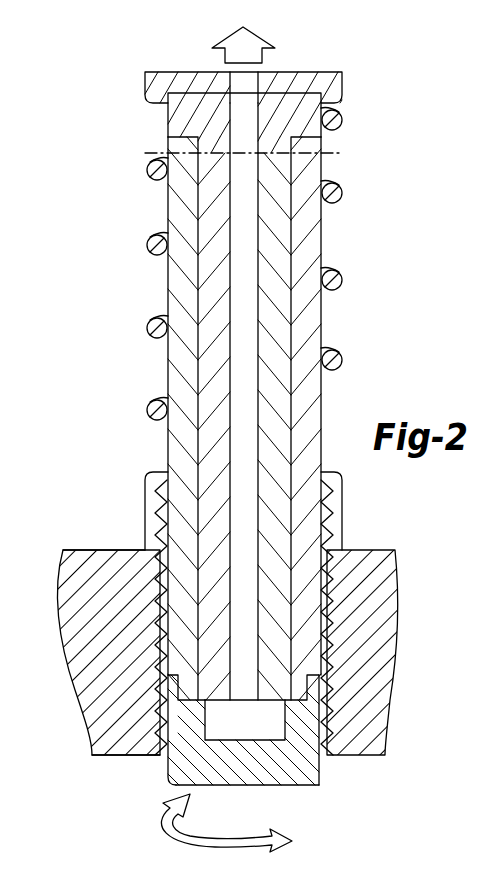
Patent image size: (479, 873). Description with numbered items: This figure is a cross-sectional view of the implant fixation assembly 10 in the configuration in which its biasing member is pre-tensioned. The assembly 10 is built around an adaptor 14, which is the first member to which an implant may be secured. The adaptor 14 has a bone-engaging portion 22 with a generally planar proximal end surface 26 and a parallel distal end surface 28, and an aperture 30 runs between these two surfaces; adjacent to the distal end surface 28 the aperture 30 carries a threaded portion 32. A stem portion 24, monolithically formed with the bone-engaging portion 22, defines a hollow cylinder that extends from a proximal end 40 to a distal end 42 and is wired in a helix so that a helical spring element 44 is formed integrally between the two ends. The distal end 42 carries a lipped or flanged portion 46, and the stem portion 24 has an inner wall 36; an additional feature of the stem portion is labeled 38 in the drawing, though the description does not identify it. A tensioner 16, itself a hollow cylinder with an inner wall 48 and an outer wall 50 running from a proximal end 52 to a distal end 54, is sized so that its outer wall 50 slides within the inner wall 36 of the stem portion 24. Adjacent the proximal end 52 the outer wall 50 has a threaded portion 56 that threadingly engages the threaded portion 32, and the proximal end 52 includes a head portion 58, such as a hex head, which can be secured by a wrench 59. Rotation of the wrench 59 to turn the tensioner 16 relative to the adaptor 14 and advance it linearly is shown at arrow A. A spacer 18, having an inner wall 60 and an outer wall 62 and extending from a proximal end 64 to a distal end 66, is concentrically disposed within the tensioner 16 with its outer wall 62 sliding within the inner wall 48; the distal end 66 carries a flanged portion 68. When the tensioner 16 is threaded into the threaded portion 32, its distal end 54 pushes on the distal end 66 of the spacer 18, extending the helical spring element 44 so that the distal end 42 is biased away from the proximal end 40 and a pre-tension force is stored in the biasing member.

The implant fixation assembly 10 is at (251, 90).
The adaptor 14 is at (240, 607).
The tensioner 16 is at (183, 275).
The spacer 18 is at (249, 118).
The bone-engaging portion 22 is at (93, 664).
The stem portion 24 is at (153, 488).
The proximal end surface 26 is at (100, 757).
The distal end surface 28 is at (388, 550).
The aperture 30 is at (250, 756).
The threaded portion 32 is at (325, 748).
The inner wall 36 is at (336, 482).
The external thread 38 is at (340, 507).
The proximal end 40 is at (145, 550).
The distal end 42 is at (203, 65).
The helical spring element 44 is at (333, 283).
The flanged portion 46 is at (175, 88).
The inner wall 48 is at (305, 216).
The outer wall 50 is at (322, 163).
The proximal end 52 is at (170, 686).
The distal end 54 is at (170, 151).
The threaded portion 56 is at (325, 663).
The head portion 58 is at (298, 702).
The wrench 59 is at (303, 778).
The inner wall 60 is at (230, 352).
The outer wall 62 is at (207, 302).
The proximal end 64 is at (212, 702).
The distal end 66 is at (291, 90).
The flanged portion 68 is at (320, 117).
The arrow A is at (165, 832).